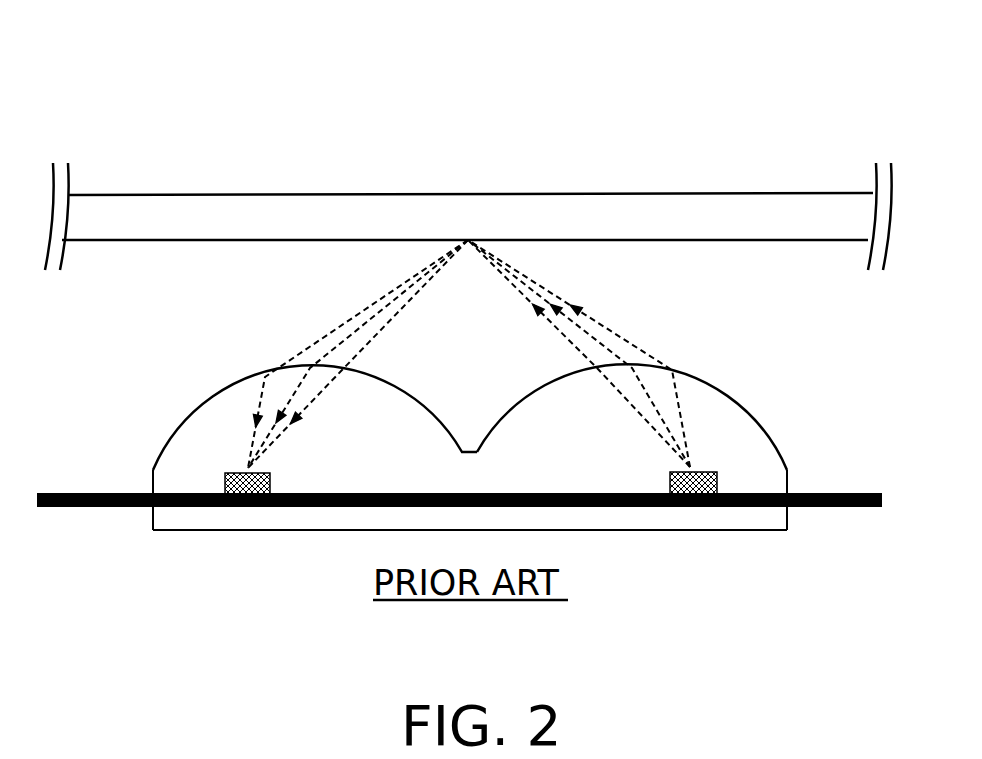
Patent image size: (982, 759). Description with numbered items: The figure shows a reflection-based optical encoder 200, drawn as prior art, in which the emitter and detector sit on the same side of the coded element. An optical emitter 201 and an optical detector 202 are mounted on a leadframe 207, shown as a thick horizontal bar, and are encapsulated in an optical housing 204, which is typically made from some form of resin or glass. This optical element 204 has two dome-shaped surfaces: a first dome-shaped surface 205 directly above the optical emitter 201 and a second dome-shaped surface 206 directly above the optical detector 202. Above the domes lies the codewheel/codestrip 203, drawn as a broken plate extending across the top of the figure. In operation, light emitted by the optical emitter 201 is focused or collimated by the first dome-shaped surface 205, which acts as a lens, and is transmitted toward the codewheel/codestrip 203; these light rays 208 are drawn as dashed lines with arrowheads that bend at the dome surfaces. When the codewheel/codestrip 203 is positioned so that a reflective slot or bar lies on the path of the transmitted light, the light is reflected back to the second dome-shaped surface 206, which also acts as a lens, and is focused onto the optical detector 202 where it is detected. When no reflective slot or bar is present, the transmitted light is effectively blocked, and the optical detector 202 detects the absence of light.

The reflection-based optical encoder 200 is at (672, 153).
The optical emitter 201 is at (720, 480).
The optical detector 202 is at (220, 480).
The codewheel/codestrip 203 is at (741, 226).
The optical housing 204 is at (429, 478).
The first dome-shaped surface 205 is at (744, 399).
The second dome-shaped surface 206 is at (195, 401).
The leadframe 207 is at (107, 509).
The light rays 208 is at (617, 319).